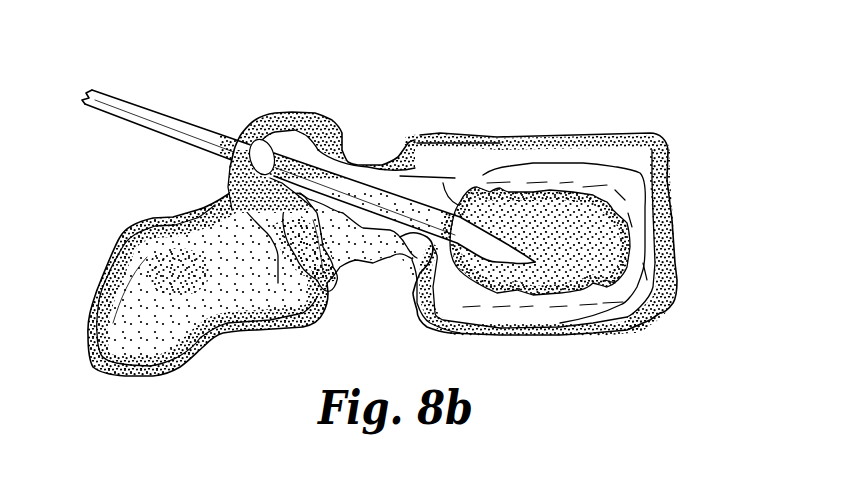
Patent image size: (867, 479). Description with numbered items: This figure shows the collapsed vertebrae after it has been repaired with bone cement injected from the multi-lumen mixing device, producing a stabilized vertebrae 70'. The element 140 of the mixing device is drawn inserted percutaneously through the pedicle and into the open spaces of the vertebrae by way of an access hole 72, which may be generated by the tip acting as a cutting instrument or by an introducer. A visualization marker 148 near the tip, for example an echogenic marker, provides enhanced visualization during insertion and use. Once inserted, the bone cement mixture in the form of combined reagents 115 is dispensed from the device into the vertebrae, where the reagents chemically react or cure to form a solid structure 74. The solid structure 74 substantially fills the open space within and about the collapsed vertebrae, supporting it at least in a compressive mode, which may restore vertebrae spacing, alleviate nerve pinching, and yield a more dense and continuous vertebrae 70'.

The access hole 72 is at (240, 141).
The element 140 is at (457, 247).
The combined reagents 115 is at (562, 280).
The vertebrae 70' is at (576, 234).
The solid structure 74 is at (640, 323).
The visualization marker 148 is at (477, 243).